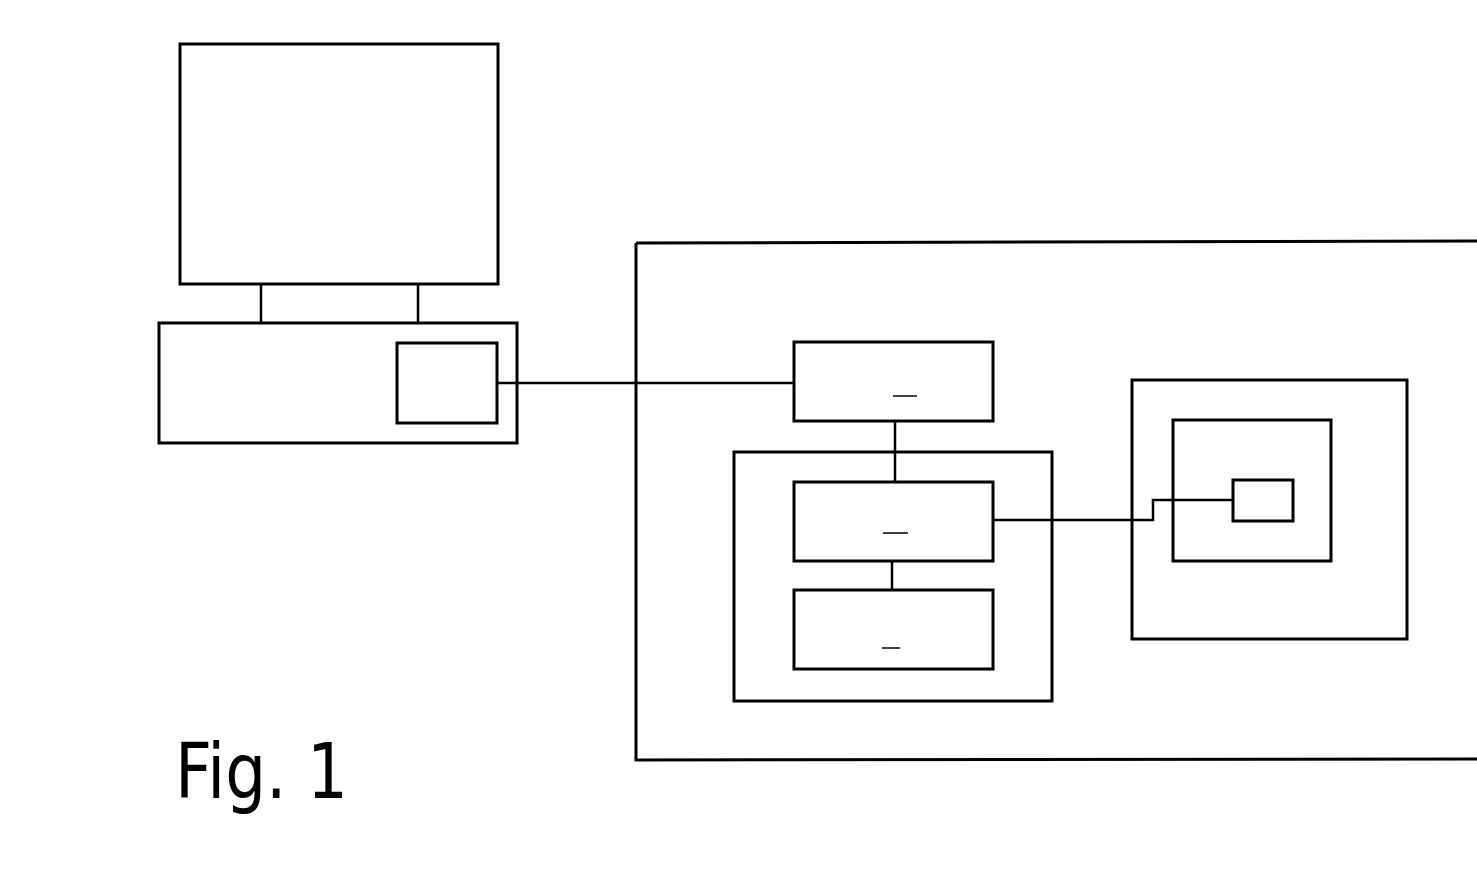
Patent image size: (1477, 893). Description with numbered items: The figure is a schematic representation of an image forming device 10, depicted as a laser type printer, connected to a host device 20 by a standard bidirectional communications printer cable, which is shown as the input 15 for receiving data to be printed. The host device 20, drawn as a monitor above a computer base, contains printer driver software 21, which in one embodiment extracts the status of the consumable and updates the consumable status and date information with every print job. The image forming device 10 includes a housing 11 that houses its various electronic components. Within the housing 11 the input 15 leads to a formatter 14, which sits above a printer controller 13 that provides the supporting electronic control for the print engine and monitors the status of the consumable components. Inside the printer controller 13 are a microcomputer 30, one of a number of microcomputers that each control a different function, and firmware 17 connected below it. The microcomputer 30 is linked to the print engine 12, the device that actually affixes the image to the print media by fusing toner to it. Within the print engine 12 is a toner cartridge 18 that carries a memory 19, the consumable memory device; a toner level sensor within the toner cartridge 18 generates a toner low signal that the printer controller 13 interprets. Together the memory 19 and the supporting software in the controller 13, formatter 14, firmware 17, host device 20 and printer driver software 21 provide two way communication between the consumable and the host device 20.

The image forming device 10 is at (1161, 192).
The housing 11 is at (910, 243).
The print engine 12 is at (1283, 639).
The printer controller 13 is at (1035, 452).
The formatter 14 is at (893, 381).
The input 15 is at (690, 383).
The firmware 17 is at (893, 629).
The toner cartridge 18 is at (1290, 562).
The memory 19 is at (1260, 480).
The host device 20 is at (498, 113).
The printer driver software 21 is at (448, 423).
The microcomputer 30 is at (893, 521).